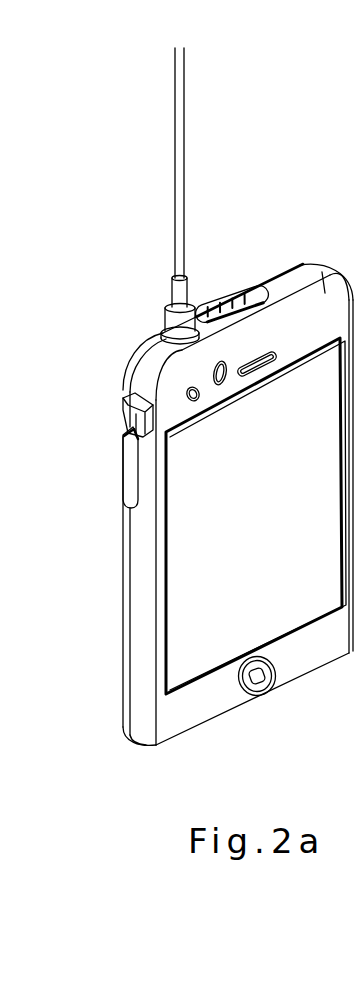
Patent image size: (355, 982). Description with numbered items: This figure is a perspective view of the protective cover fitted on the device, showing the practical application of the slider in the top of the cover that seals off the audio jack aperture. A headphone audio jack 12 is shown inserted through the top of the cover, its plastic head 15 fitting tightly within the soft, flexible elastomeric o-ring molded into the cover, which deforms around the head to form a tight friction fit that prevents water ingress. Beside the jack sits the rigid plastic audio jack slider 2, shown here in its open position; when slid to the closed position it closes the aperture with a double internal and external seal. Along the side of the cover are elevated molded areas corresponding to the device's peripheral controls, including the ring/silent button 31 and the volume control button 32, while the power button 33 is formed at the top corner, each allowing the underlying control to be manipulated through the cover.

The audio jack slider 2 is at (244, 281).
The audio jack 12 is at (186, 276).
The plastic head 15 is at (167, 322).
The ring/silent button 31 is at (123, 400).
The volume control button 32 is at (123, 473).
The power button 33 is at (294, 266).